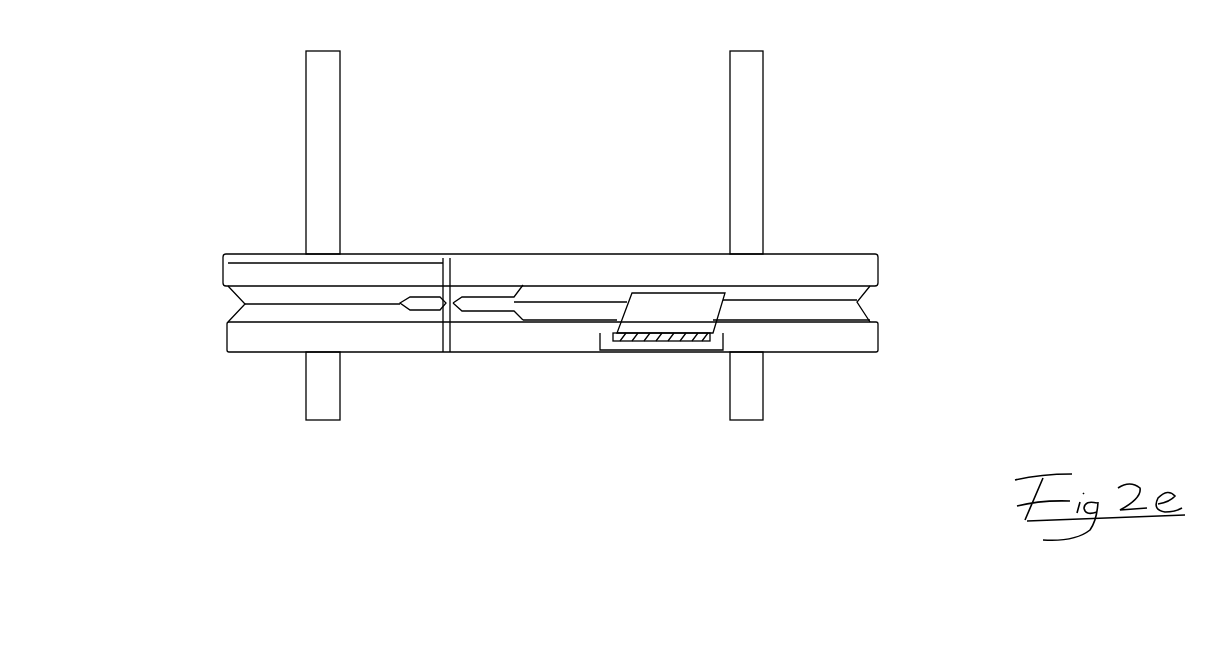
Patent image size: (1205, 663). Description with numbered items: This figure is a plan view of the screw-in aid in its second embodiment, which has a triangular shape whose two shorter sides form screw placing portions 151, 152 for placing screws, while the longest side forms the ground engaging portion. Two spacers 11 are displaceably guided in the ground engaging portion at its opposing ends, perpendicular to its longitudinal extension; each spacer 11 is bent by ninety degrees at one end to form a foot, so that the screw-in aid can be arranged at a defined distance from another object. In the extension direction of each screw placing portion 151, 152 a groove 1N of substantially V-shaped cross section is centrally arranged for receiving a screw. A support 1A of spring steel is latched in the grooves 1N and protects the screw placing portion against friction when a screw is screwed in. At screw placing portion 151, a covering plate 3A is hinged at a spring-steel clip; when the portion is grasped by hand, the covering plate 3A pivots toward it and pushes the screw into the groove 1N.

The spacer 11 is at (342, 182).
The screw placing portion 151 is at (593, 231).
The screw placing portion 152 is at (390, 363).
The groove 1N is at (230, 304).
The support 1A is at (277, 312).
The covering plate 3A is at (652, 355).